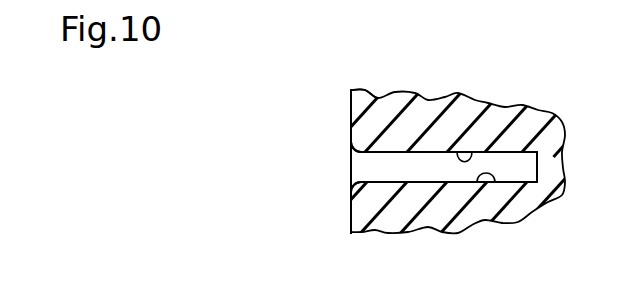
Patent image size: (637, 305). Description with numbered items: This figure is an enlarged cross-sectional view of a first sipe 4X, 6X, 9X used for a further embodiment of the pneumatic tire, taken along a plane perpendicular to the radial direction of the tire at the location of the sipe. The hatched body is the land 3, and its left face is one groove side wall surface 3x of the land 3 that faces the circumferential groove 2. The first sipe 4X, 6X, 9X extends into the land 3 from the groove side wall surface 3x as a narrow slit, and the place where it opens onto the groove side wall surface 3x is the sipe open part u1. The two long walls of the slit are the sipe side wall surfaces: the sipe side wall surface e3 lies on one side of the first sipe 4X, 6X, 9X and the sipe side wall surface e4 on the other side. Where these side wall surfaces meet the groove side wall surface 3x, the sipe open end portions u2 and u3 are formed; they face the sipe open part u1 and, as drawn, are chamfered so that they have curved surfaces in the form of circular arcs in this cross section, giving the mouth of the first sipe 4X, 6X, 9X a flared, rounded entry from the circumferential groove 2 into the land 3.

The first sipe 4X is at (469, 127).
The first sipe 6X is at (469, 127).
The first sipe 9X is at (420, 163).
The circumferential groove 2 is at (318, 178).
The sipe open end portion u2 is at (350, 153).
The open part of the first sipe u1 is at (358, 170).
The sipe open end portion u3 is at (358, 184).
The sipe side wall surface e3 is at (470, 158).
The sipe side wall surface e4 is at (494, 183).
The land 3 is at (351, 234).
The groove side wall surface 3x is at (350, 97).